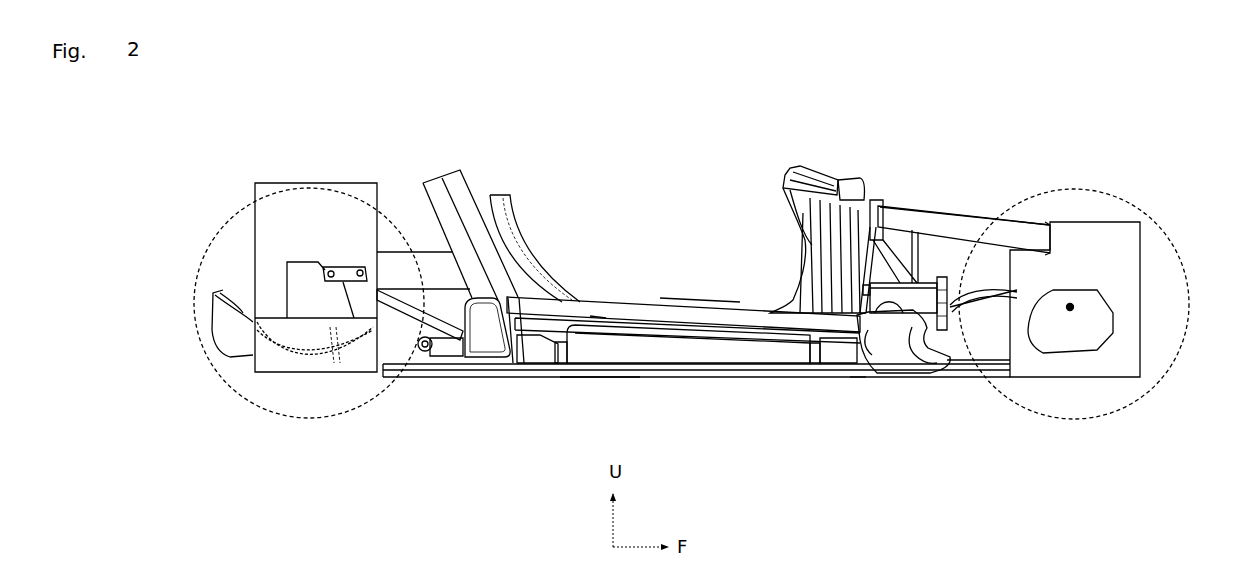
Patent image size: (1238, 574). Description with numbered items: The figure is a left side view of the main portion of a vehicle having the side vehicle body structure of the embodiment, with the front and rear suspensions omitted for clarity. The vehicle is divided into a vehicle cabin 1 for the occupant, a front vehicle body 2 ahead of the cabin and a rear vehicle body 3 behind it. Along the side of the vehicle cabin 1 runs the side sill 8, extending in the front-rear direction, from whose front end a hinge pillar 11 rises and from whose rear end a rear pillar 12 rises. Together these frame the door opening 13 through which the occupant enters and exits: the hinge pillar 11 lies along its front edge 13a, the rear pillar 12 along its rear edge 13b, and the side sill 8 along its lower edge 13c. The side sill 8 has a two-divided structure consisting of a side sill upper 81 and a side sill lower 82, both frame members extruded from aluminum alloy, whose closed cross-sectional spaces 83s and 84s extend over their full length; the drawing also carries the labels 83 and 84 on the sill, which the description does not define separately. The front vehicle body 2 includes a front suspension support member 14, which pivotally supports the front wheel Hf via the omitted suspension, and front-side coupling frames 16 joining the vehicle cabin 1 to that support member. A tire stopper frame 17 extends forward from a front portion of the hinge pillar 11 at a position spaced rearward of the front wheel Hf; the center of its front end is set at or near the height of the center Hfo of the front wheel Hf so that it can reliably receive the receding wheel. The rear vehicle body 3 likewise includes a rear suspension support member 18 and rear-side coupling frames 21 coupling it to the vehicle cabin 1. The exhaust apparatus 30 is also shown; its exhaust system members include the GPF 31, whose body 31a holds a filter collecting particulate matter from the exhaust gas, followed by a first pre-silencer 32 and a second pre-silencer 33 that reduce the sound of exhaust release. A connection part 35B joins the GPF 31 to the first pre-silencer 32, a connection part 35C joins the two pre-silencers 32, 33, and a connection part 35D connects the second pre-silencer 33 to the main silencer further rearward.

The vehicle cabin 1 is at (823, 148).
The front vehicle body 2 is at (1000, 140).
The rear vehicle body 3 is at (389, 175).
The side sill 8 is at (600, 383).
The hinge pillar 11 is at (852, 182).
The rear pillar 12 is at (468, 188).
The door opening 13 is at (712, 216).
The front edge 13a is at (796, 256).
The rear edge 13b is at (533, 211).
The lower edge 13c is at (700, 294).
The front suspension support member 14 is at (1072, 221).
The front-side coupling frame 16 is at (940, 210).
The tire stopper frame 17 is at (950, 318).
The rear suspension support member 18 is at (263, 183).
The rear-side coupling frame 21 is at (395, 252).
The exhaust apparatus 30 is at (710, 365).
The GPF 31 is at (950, 376).
The body 31a is at (880, 355).
The first pre-silencer 32 is at (655, 371).
The second pre-silencer 33 is at (471, 358).
The connection part 35B is at (810, 378).
The connection part 35C is at (522, 378).
The connection part 35D is at (419, 318).
The side sill upper 81 is at (636, 296).
The side sill lower 82 is at (768, 378).
The seat slide rail 83 is at (745, 322).
The closed cross-sectional space 83s is at (598, 318).
The floor reinforcement 84 is at (585, 378).
The closed cross-sectional space 84s is at (857, 378).
The front wheel Hf is at (1102, 422).
The center of the front wheel Hfo is at (1071, 305).